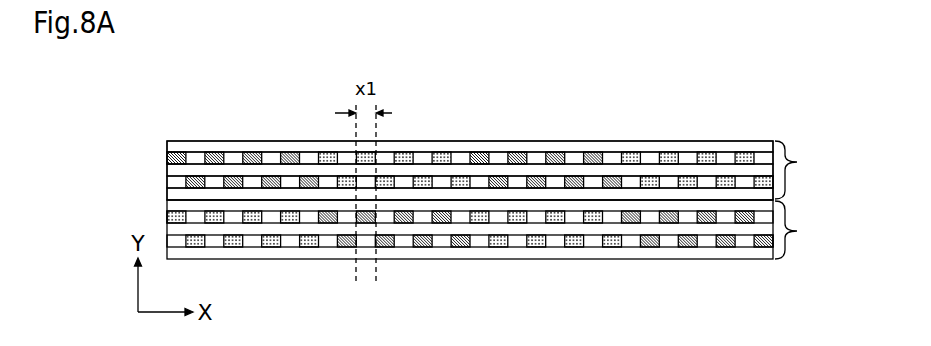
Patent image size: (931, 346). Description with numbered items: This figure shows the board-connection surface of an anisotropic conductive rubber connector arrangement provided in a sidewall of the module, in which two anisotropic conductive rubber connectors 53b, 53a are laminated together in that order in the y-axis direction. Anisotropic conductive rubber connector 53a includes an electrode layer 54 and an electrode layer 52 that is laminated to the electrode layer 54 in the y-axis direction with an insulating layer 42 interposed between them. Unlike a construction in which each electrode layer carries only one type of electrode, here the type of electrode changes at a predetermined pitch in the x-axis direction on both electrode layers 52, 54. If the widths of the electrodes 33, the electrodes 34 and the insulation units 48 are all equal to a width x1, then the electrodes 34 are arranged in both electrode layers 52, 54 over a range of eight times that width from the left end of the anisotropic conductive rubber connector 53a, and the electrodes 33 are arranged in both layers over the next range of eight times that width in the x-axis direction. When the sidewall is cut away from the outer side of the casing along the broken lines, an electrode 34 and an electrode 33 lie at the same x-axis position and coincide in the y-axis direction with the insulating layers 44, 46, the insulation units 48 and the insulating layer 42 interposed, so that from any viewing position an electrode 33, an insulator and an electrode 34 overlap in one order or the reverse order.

The electrode 33 is at (403, 151).
The electrode 34 is at (285, 150).
The insulating layer 42 is at (177, 169).
The insulating layer 44 is at (177, 143).
The insulating layer 46 is at (177, 192).
The insulation unit 48 is at (502, 151).
The electrode layer 52 is at (164, 157).
The anisotropic conductive rubber connector 53a is at (796, 160).
The anisotropic conductive rubber connector 53b is at (500, 229).
The electrode layer 54 is at (164, 182).